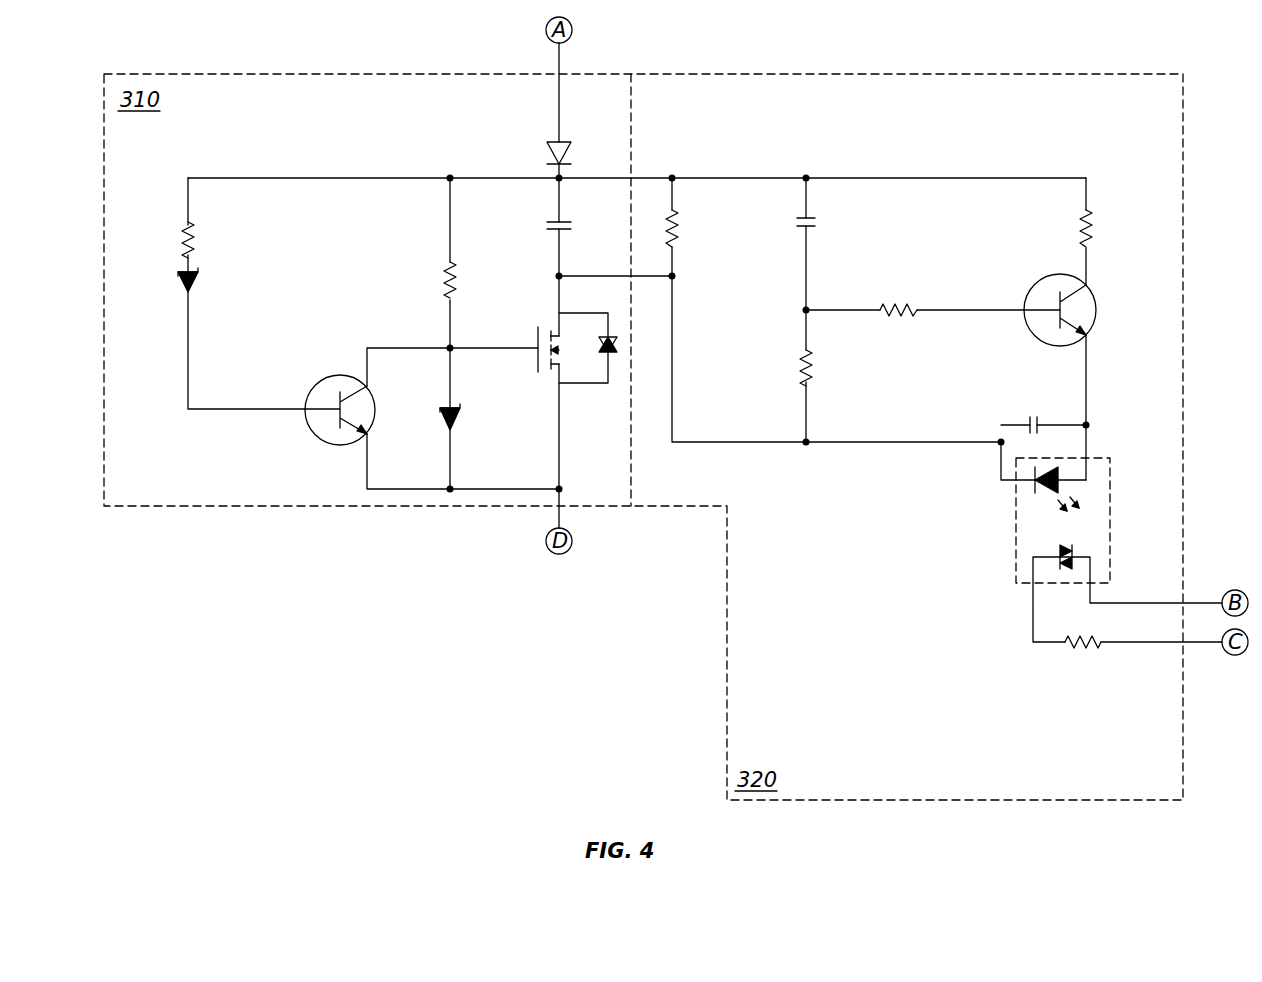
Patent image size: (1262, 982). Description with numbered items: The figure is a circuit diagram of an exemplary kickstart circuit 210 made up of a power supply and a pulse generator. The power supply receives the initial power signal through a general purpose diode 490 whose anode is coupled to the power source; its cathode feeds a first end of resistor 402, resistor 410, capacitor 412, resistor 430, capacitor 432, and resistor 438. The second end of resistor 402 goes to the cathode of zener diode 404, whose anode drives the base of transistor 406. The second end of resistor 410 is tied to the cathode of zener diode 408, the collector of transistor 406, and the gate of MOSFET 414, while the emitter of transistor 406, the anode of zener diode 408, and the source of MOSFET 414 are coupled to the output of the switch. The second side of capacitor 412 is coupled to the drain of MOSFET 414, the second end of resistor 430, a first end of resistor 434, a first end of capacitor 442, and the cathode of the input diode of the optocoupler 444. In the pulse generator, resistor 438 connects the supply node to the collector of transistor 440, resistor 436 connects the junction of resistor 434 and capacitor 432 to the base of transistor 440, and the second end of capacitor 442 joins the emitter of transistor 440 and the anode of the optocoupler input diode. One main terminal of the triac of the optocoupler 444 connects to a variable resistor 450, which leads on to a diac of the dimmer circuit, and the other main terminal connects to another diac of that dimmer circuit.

The kickstart circuit 210 is at (458, 582).
The resistor 402 is at (196, 244).
The zener diode 404 is at (197, 295).
The transistor 406 is at (342, 376).
The zener diode 408 is at (458, 430).
The resistor 410 is at (442, 262).
The capacitor 412 is at (548, 228).
The metal-oxide semiconductor field effect transistor (MOSFET) 414 is at (532, 360).
The resistor 430 is at (680, 240).
The capacitor 432 is at (818, 222).
The resistor 434 is at (795, 372).
The resistor 436 is at (897, 302).
The resistor 438 is at (1080, 222).
The transistor 440 is at (1097, 308).
The capacitor 442 is at (1030, 416).
The optocoupler 444 is at (1016, 530).
The resistor 450 is at (1076, 650).
The general purpose diode 490 is at (550, 144).